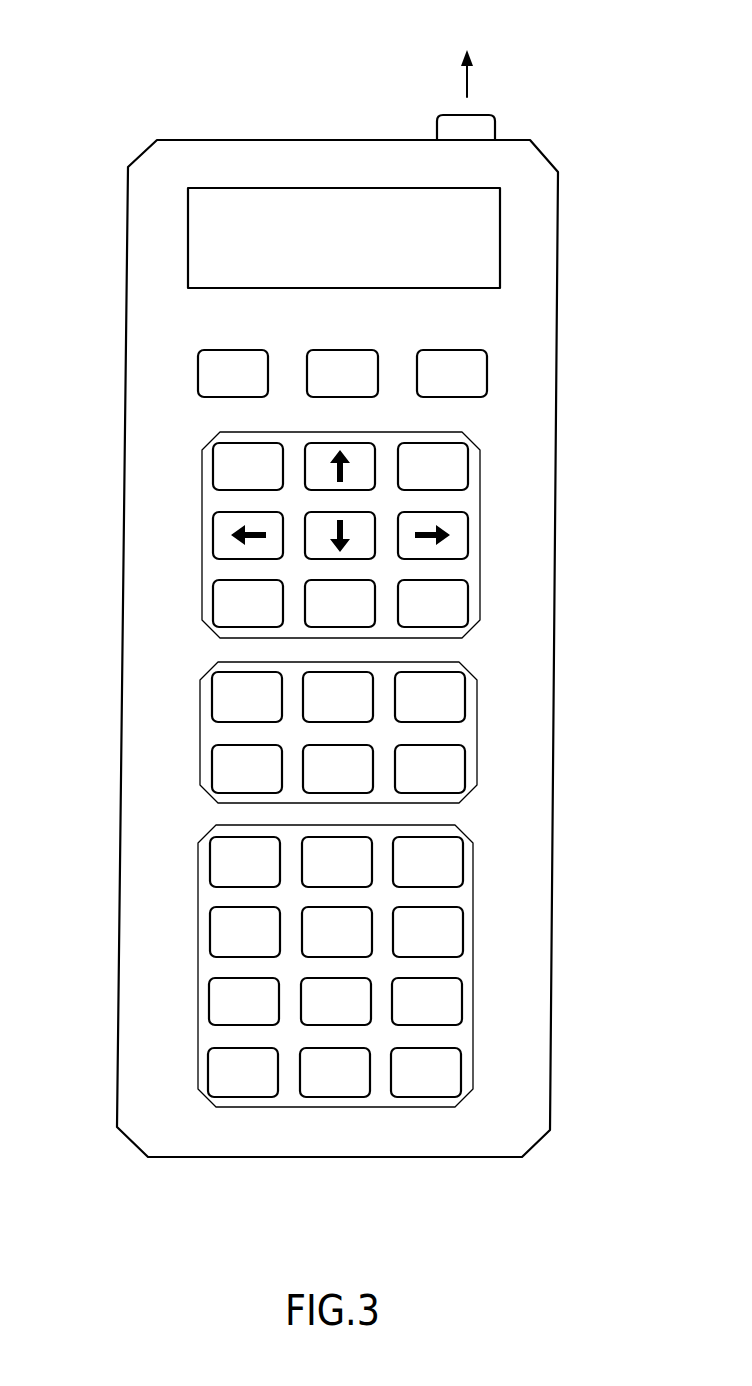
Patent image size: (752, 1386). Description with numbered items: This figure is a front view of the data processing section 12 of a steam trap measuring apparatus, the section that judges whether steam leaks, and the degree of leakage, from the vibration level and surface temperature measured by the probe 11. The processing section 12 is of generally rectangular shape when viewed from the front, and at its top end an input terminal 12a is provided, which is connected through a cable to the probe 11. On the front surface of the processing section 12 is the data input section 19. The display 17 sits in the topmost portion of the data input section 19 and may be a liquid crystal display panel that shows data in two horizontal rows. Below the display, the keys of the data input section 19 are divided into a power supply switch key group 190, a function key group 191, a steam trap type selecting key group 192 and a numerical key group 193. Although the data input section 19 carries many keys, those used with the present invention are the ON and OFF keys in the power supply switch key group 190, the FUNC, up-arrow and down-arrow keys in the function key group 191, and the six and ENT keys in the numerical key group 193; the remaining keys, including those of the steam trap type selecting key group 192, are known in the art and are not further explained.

The probe 11 is at (463, 51).
The data processing section 12 is at (236, 137).
The input terminal 12a is at (478, 128).
The display 17 is at (488, 240).
The data input section 19 is at (163, 410).
The power supply switch key group 190 is at (495, 372).
The function key group 191 is at (480, 539).
The steam trap type selecting key group 192 is at (477, 734).
The numerical key group 193 is at (473, 970).